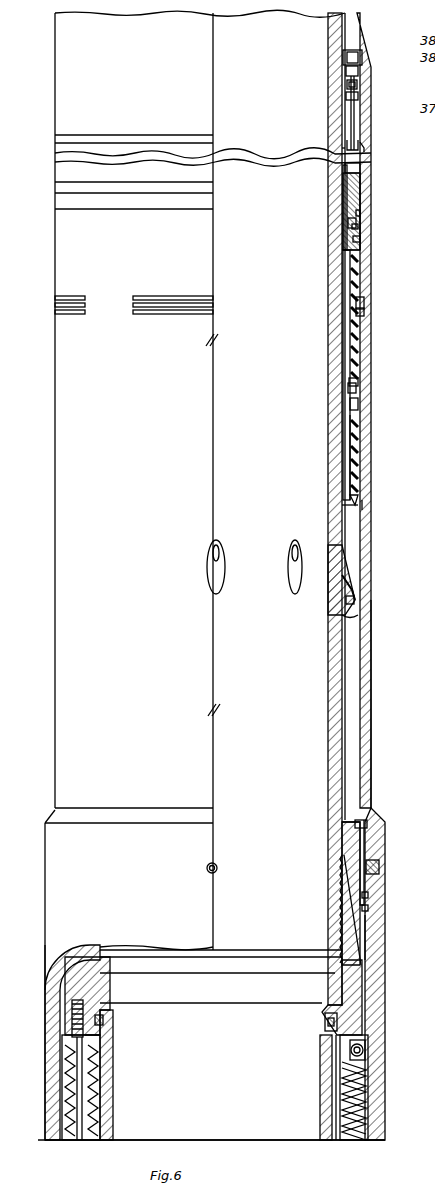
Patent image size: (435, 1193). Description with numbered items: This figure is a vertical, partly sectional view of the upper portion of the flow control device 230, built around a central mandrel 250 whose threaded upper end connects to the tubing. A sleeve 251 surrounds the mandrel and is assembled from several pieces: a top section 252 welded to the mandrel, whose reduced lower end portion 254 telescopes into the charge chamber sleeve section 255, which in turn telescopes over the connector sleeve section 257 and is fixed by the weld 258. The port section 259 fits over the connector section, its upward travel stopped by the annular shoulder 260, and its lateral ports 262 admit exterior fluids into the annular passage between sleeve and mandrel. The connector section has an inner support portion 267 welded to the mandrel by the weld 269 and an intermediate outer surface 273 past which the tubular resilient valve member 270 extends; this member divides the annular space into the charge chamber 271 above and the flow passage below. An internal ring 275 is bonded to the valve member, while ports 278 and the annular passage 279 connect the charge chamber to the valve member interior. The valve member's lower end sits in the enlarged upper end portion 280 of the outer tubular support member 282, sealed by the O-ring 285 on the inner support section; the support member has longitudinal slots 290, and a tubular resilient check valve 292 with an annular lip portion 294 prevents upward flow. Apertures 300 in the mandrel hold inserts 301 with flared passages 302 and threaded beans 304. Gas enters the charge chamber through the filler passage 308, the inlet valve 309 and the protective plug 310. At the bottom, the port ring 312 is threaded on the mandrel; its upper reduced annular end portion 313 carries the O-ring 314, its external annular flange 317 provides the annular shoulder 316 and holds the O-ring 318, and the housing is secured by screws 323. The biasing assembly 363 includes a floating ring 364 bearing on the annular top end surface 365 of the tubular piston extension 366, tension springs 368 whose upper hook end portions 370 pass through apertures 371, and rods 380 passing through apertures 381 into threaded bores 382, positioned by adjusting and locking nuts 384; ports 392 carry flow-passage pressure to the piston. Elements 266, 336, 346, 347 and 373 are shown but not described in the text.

The flow control device 230 is at (73, 1148).
The mandrel 250 is at (328, 58).
The sleeve 251 is at (372, 680).
The top section 252 is at (358, 95).
The reduced lower end portion 254 is at (340, 148).
The charge chamber sleeve section 255 is at (364, 152).
The connector sleeve section 257 is at (363, 202).
The weld 258 is at (366, 186).
The port section 259 is at (366, 535).
The annular shoulder 260 is at (361, 214).
The ports 262 is at (175, 296).
The clip 266 is at (360, 142).
The inner support portion 267 is at (344, 305).
The weld 269 is at (340, 503).
The tubular resilient valve member 270 is at (362, 282).
The charge chamber 271 is at (368, 165).
The intermediate outer surface 273 is at (361, 245).
The internal ring 275 is at (359, 228).
The ports 278 is at (343, 250).
The annular passage 279 is at (343, 183).
The enlarged upper end portion 280 is at (359, 384).
The outer tubular support member 282 is at (359, 406).
The O-ring 285 is at (349, 222).
The longitudinal slots 290 is at (362, 432).
The tubular resilient check valve 292 is at (346, 466).
The annular lip portion 294 is at (360, 486).
The apertures 300 is at (358, 617).
The inserts 301 is at (345, 577).
The flared passages 302 is at (330, 560).
The beans 304 is at (352, 600).
The filler passage 308 is at (349, 125).
The inlet valve 309 is at (348, 88).
The plug 310 is at (357, 55).
The bottom port ring 312 is at (385, 975).
The upper reduced annular end portion 313 is at (360, 842).
The O-ring 314 is at (366, 826).
The annular shoulder 316 is at (368, 896).
The external annular flange 317 is at (368, 935).
The O-ring 318 is at (368, 910).
The screws 323 is at (207, 868).
The keeper 336 is at (365, 312).
The seal 346 is at (325, 1020).
The ring 347 is at (328, 1028).
The biasing assembly 363 is at (65, 1060).
The floating ring 364 is at (100, 1034).
The annular top end surface 365 is at (362, 1038).
The tubular piston extension 366 is at (365, 1088).
The tension springs 368 is at (365, 1108).
The upper hook end portions 370 is at (365, 1050).
The apertures 371 is at (336, 1060).
The spring 373 is at (98, 1060).
The rod 380 is at (78, 1100).
The apertures 381 is at (68, 1040).
The threaded bore 382 is at (84, 1000).
The adjusting and locking nut 384 is at (104, 1020).
The ports 392 is at (343, 890).